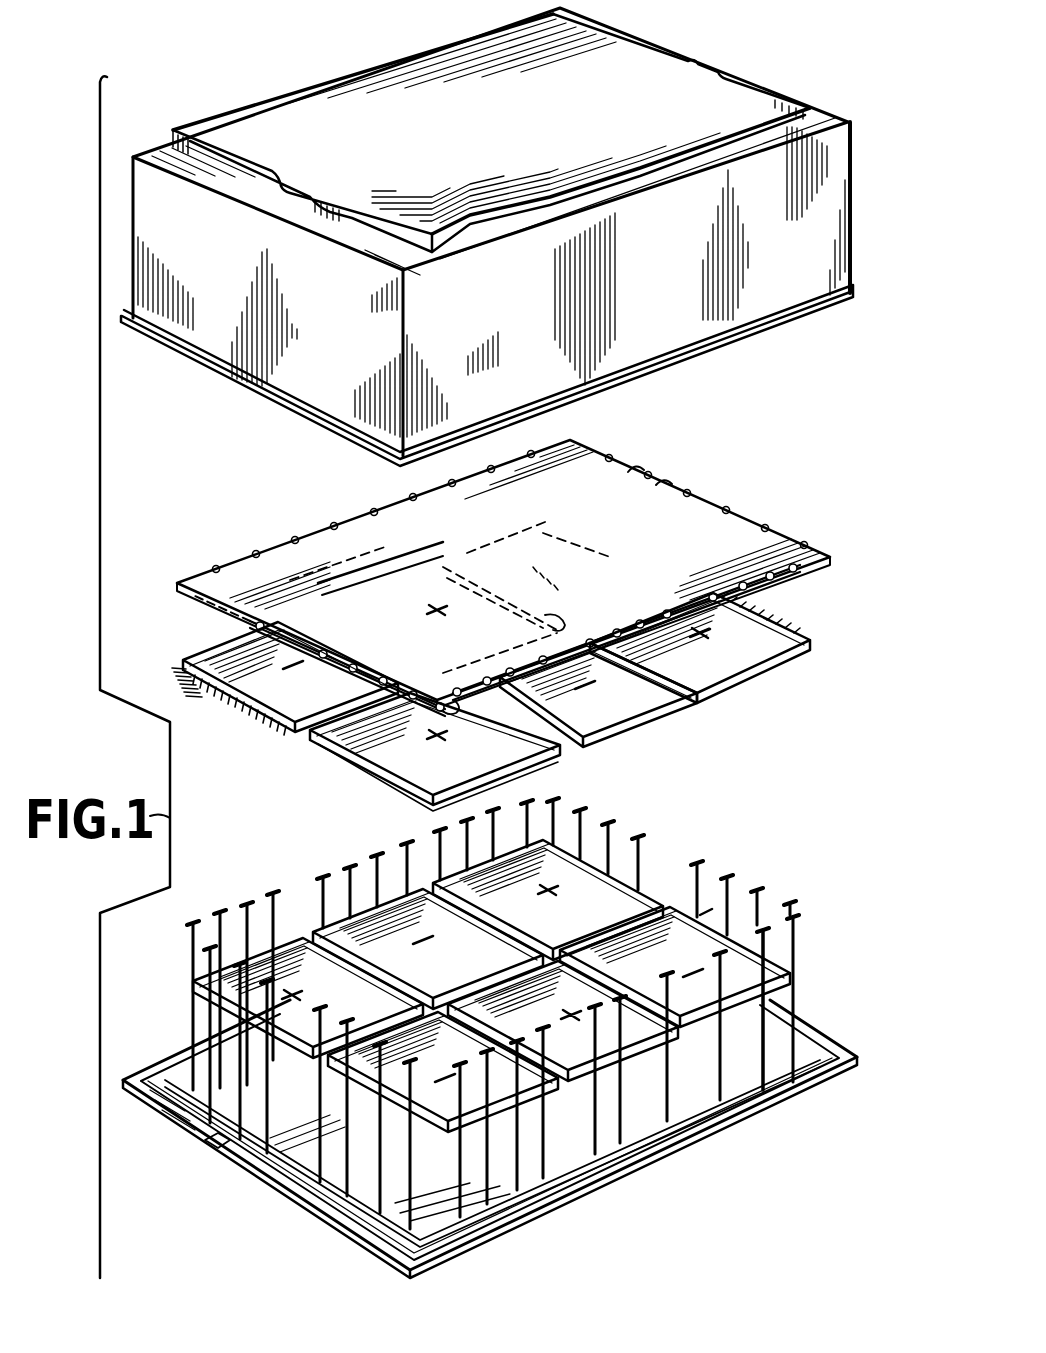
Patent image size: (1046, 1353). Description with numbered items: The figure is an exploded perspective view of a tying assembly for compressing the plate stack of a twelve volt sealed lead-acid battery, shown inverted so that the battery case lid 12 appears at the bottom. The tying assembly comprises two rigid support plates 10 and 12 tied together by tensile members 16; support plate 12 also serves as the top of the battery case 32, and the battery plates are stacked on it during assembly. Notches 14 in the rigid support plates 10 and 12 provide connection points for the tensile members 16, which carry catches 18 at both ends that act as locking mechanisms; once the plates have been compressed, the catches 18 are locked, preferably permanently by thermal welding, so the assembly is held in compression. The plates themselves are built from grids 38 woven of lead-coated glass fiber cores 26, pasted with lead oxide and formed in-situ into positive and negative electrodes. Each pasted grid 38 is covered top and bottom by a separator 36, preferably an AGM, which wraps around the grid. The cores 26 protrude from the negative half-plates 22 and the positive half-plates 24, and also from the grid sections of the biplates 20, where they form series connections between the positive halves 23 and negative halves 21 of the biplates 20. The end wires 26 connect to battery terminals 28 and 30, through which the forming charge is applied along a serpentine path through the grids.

The rigid support plate 10 is at (715, 512).
The battery case lid 12 is at (504, 1124).
The notches 14 is at (663, 480).
The tensile members 16 is at (493, 1013).
The catches 18 is at (352, 863).
The biplates 20 is at (650, 897).
The negative half of biplate 21 is at (715, 905).
The negative half-plates 22 is at (269, 697).
The positive half of biplate 23 is at (578, 880).
The positive half-plates 24 is at (812, 657).
The lead-coated glass fiber cores 26 is at (245, 716).
The battery terminal 28 is at (762, 1110).
The battery terminal 30 is at (218, 1150).
The battery case 32 is at (710, 93).
The separators 36 is at (385, 782).
The grids 38 is at (427, 753).